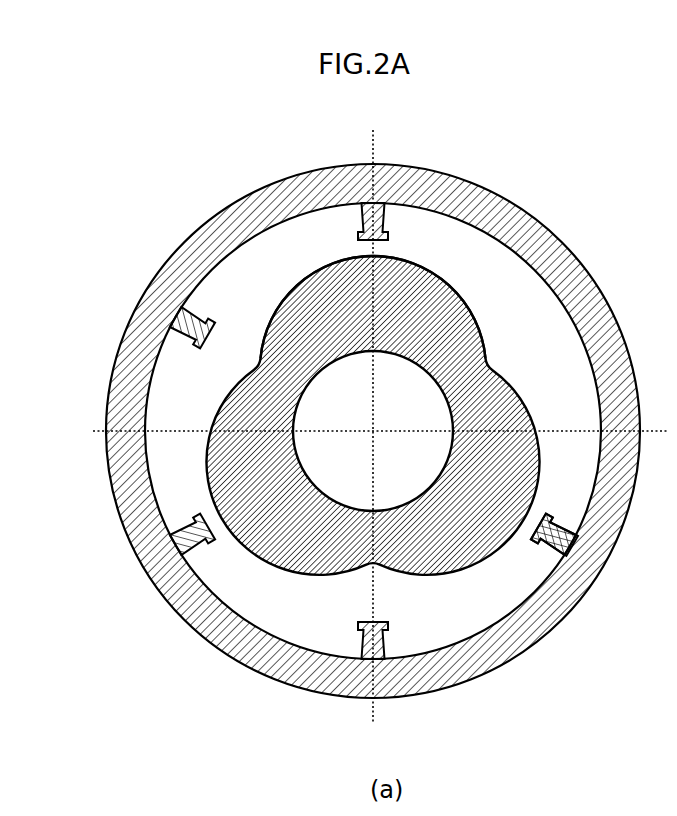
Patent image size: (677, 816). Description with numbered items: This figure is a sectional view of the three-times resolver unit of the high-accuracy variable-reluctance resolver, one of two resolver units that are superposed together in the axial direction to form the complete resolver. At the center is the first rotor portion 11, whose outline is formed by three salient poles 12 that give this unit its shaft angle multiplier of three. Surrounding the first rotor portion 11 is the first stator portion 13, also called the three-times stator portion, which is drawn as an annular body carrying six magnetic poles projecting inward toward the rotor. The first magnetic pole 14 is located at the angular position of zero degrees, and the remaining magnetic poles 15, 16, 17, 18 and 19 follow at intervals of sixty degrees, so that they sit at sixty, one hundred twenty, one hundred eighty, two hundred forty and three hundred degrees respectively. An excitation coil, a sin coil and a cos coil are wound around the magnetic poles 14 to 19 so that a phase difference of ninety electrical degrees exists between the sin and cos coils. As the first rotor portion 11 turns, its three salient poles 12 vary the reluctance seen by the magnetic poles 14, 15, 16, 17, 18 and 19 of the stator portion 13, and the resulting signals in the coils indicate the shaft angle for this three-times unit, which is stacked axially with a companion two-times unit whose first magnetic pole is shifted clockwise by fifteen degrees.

The first rotor portion 11 is at (263, 320).
The salient pole 12 is at (298, 277).
The first stator portion 13 is at (238, 200).
The first magnetic pole 14 is at (387, 229).
The magnetic pole 15 is at (558, 330).
The magnetic pole 16 is at (553, 553).
The magnetic pole 17 is at (388, 657).
The magnetic pole 18 is at (197, 548).
The magnetic pole 19 is at (190, 346).